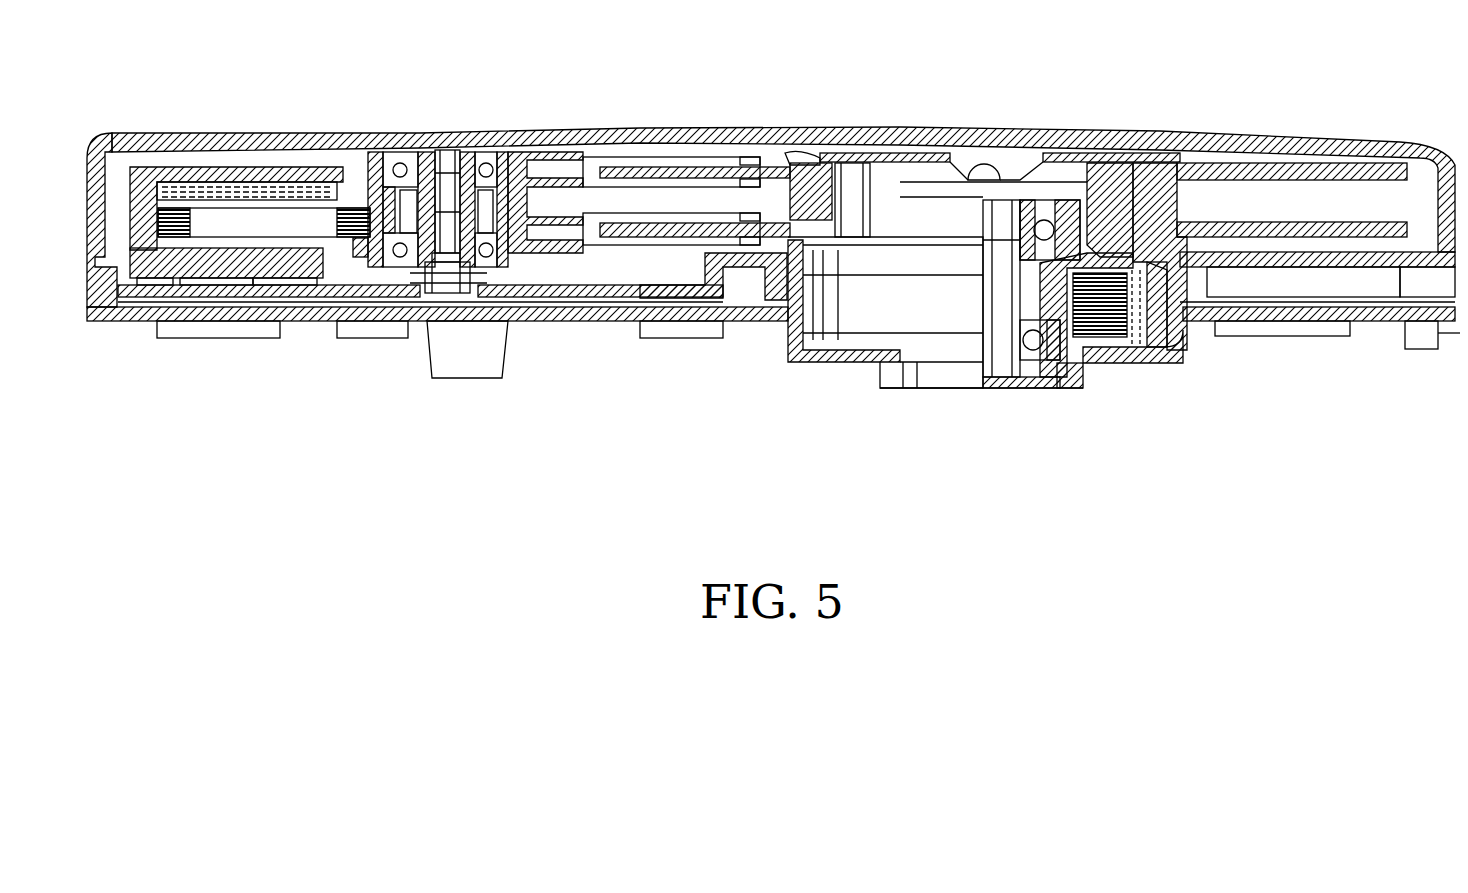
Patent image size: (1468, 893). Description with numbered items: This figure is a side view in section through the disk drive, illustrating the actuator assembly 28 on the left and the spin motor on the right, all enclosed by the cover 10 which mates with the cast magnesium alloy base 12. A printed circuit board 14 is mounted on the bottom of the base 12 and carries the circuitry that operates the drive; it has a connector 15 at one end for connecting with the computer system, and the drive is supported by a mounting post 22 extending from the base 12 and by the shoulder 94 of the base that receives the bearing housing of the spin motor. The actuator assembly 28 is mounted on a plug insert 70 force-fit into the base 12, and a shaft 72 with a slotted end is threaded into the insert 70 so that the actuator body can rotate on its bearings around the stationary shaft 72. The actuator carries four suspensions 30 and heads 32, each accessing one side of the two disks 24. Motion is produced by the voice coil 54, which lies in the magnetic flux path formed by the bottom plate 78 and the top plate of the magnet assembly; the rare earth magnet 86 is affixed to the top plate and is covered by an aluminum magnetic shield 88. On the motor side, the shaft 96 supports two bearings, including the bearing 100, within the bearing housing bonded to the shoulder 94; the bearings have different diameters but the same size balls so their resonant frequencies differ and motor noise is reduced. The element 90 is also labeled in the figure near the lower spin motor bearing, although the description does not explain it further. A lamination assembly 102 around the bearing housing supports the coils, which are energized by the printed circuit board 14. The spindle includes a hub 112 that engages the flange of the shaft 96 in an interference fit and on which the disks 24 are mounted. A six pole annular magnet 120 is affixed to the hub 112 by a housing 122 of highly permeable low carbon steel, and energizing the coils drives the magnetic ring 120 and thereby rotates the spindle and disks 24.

The cover 10 is at (1000, 128).
The base 12 is at (1147, 350).
The printed circuit board 14 is at (313, 322).
The connector 15 is at (1427, 338).
The mounting posts 22 is at (493, 347).
The disks 24 is at (1273, 180).
The actuator assembly 28 is at (373, 57).
The suspensions 30 is at (653, 157).
The heads 32 is at (748, 162).
The voice coil 54 is at (335, 218).
The plug insert 70 is at (437, 297).
The shaft 72 is at (450, 150).
The bottom plate 78 is at (507, 152).
The magnet 86 is at (232, 185).
The magnetic shield 88 is at (155, 182).
The spindle bearing 90 is at (1018, 367).
The shoulder 94 is at (1073, 357).
The shaft 96 is at (983, 303).
The bearing 100 is at (1057, 208).
The lamination assembly 102 is at (1120, 320).
The hub 112 is at (878, 187).
The annular magnet 120 is at (1160, 355).
The housing 122 is at (870, 320).